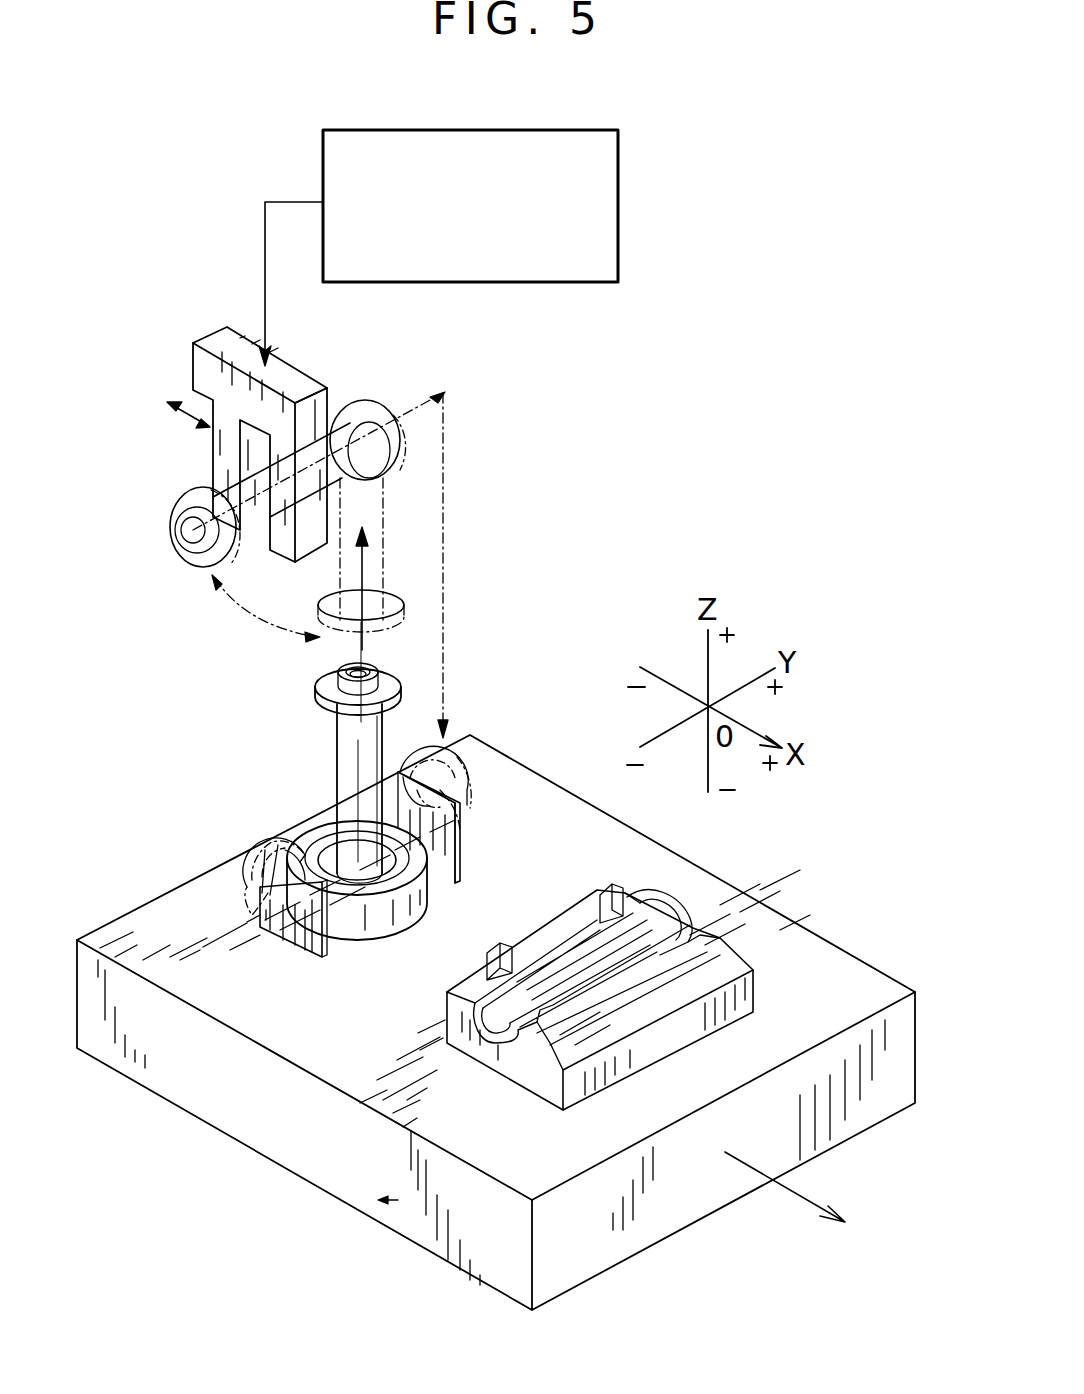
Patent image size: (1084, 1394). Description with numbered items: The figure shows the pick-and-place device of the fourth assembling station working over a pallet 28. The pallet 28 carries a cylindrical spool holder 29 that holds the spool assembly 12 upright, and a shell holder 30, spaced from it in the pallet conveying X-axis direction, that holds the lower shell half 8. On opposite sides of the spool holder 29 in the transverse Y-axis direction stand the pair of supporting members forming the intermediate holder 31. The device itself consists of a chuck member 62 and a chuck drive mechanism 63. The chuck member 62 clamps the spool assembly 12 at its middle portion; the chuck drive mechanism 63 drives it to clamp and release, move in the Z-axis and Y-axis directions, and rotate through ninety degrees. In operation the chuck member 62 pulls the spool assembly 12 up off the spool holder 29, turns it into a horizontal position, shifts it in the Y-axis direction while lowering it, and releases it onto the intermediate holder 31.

The lower shell half 8 is at (567, 957).
The spool assembly 12 is at (403, 673).
The pallet 28 is at (422, 1247).
The spool holder 29 is at (410, 902).
The shell holder 30 is at (702, 1024).
The intermediate holder 31 is at (303, 955).
The chuck member 62 is at (228, 326).
The chuck drive mechanism 63 is at (618, 202).